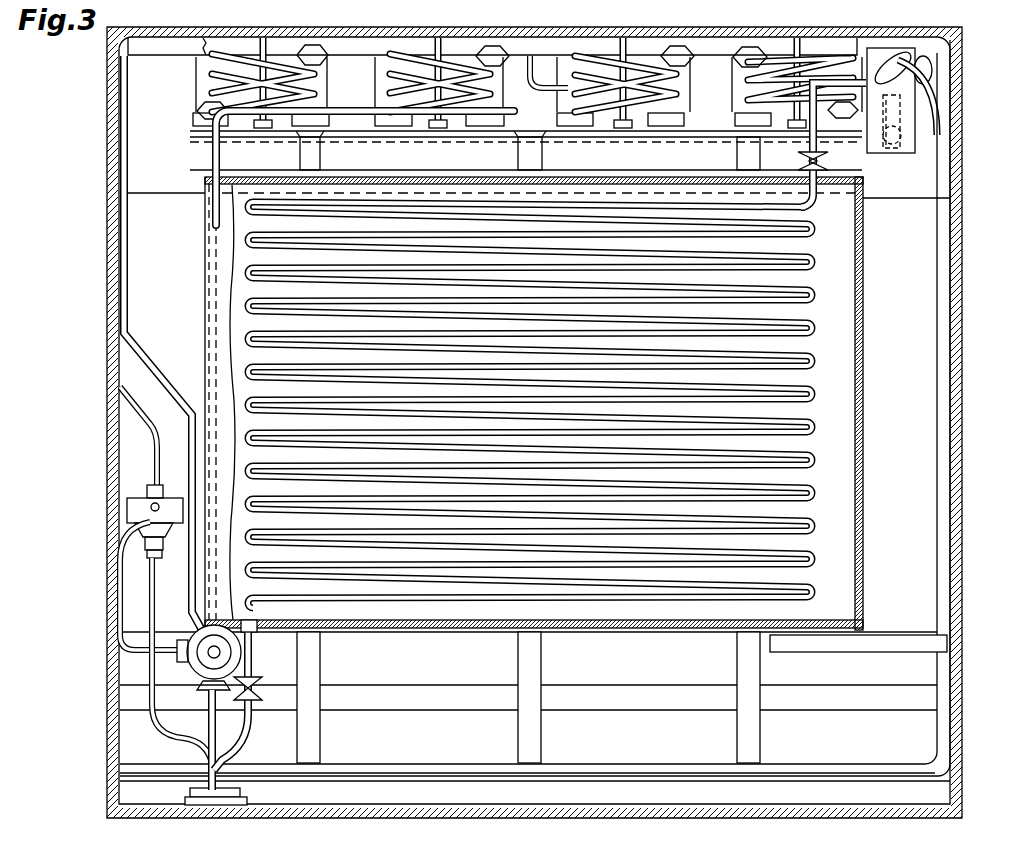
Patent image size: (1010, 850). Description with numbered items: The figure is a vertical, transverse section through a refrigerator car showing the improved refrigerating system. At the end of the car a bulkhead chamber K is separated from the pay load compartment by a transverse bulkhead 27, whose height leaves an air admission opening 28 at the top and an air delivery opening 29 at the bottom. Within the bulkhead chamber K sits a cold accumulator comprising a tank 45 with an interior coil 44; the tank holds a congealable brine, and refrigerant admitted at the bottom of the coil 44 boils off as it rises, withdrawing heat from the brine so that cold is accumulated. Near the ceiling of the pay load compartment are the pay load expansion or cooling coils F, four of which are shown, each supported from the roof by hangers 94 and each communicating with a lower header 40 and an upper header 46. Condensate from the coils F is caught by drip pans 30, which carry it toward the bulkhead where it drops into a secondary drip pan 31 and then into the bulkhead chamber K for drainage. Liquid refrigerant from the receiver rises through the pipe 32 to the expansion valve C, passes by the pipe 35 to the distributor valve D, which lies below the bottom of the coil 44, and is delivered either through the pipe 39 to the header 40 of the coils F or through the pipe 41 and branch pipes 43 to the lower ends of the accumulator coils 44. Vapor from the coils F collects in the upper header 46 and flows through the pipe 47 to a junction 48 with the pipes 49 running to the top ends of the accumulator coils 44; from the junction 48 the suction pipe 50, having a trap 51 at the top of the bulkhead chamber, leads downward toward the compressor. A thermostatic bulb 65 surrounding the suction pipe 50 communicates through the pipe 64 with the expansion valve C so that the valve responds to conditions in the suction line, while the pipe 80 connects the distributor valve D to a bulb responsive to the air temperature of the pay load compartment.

The bulkhead chamber K is at (135, 146).
The upper header 46 is at (518, 52).
The hangers 94 is at (268, 47).
The expansion coils F is at (392, 72).
The pipe 47 is at (720, 90).
The pipe 64 is at (533, 47).
The drip pans 30 is at (322, 128).
The secondary drip pan 31 is at (205, 143).
The air admission opening 28 is at (526, 159).
The transverse bulkhead 27 is at (148, 205).
The cold accumulator tank 45 is at (862, 604).
The cold accumulator coil 44 is at (270, 280).
The pipe 39 is at (212, 158).
The header 40 is at (521, 118).
The pipes 49 is at (822, 148).
The trap 51 is at (878, 153).
The thermostatic bulb 65 is at (903, 150).
The junction 48 is at (918, 76).
The suction pipe 50 is at (953, 226).
The air delivery opening 29 is at (490, 667).
The pipe 80 is at (128, 237).
The expansion valve C is at (127, 511).
The pipe 35 is at (125, 536).
The pipe 32 is at (150, 579).
The distributor valve D is at (198, 666).
The pipe 41 is at (212, 713).
The branch pipes 43 is at (254, 724).